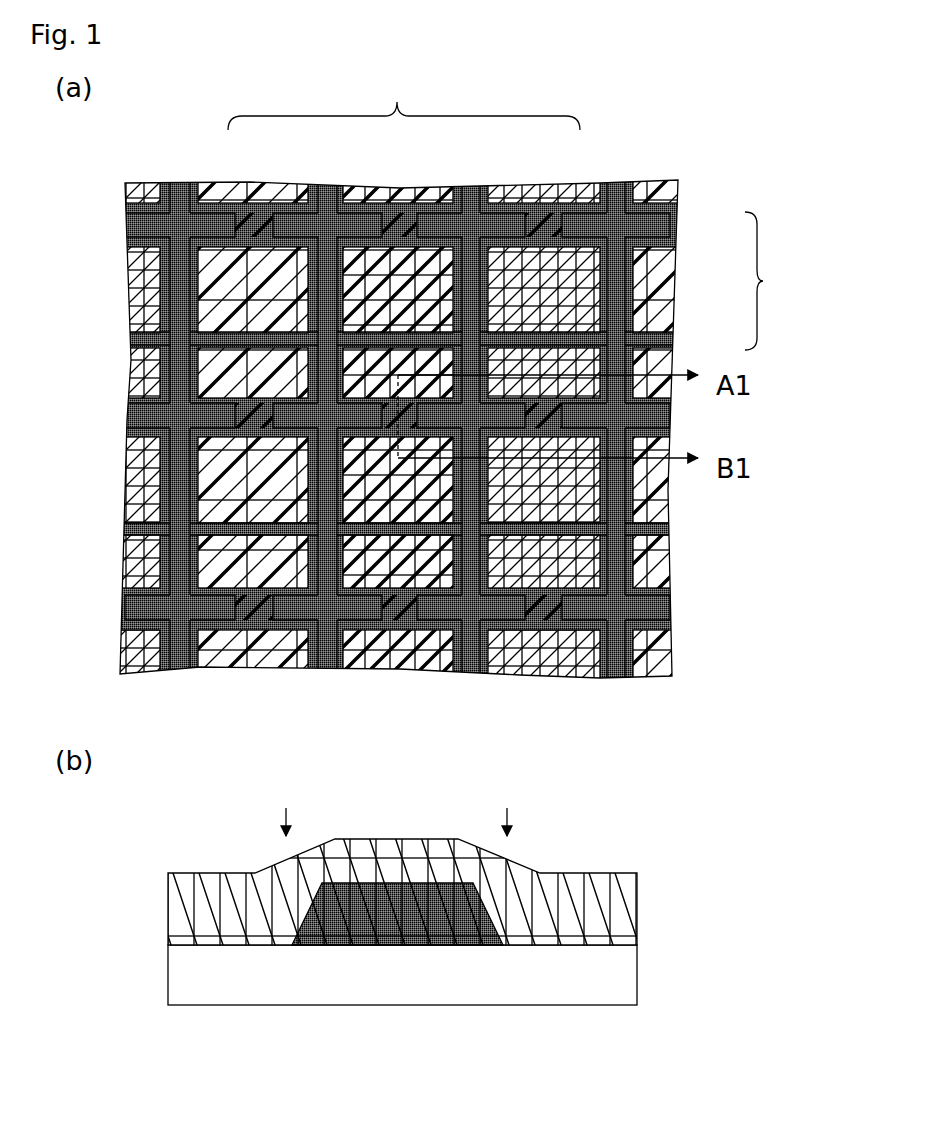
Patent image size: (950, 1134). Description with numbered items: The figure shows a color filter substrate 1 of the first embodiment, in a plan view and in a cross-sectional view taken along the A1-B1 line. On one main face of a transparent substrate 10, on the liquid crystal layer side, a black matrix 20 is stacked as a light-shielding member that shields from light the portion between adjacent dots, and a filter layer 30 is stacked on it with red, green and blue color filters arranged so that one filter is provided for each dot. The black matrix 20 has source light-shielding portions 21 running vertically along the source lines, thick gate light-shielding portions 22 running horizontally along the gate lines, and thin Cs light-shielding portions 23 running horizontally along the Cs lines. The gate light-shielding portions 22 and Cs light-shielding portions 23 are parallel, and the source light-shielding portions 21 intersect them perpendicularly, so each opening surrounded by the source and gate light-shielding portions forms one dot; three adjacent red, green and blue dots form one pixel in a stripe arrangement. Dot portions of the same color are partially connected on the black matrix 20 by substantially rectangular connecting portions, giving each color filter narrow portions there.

The color filter substrate 1 is at (423, 400).
The transparent substrate 10 is at (623, 975).
The black matrix 20 is at (420, 1045).
The source light-shielding portion 21 is at (617, 292).
The gate light-shielding portion 22 is at (664, 226).
The Cs light-shielding portion 23 is at (668, 343).
The filter layer 30 is at (404, 98).